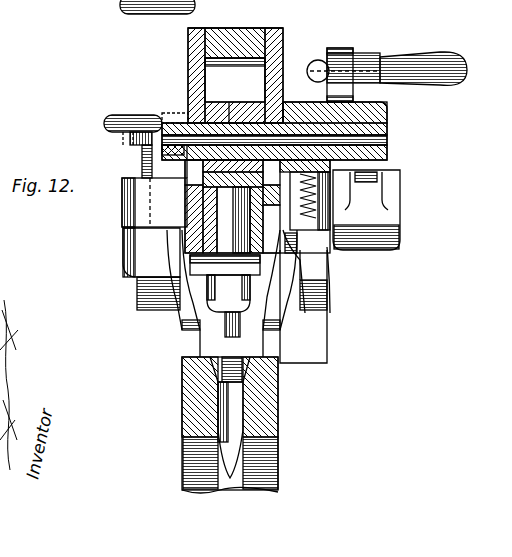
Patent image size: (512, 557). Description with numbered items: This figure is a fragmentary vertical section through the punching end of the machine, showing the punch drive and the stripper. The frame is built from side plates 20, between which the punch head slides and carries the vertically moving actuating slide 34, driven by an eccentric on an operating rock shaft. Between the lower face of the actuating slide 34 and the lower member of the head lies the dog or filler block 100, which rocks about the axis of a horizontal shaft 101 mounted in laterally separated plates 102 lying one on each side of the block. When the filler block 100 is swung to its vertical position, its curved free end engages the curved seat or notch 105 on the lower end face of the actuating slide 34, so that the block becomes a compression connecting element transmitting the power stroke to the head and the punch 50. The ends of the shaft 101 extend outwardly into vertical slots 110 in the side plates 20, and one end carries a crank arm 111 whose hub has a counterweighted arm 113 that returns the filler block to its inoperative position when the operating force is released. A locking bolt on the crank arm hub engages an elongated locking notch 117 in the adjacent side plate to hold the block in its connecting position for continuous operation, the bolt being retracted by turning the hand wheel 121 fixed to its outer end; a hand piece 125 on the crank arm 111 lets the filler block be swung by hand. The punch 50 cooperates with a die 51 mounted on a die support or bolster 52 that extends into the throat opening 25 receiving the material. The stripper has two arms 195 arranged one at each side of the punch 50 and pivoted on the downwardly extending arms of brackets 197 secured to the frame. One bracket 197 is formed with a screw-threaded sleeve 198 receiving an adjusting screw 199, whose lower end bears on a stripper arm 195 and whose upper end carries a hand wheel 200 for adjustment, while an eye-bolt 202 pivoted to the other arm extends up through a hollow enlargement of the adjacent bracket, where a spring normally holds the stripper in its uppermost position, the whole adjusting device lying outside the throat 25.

The side plates 20 is at (189, 50).
The actuating slide 34 is at (237, 27).
The dog or filler block 100 is at (240, 101).
The laterally separated plates 102 is at (207, 110).
The curved seat or notch 105 is at (207, 62).
The vertical slots 110 is at (287, 112).
The crank arm 111 is at (348, 90).
The counterweighted arm 113 is at (410, 202).
The elongated locking notch 117 is at (272, 240).
The hand wheel 121 is at (134, 12).
The hand piece 125 is at (443, 54).
The rock shaft 101 is at (388, 137).
The stripper arms 195 is at (187, 310).
The brackets 197 is at (142, 292).
The screw-threaded sleeve 198 is at (128, 207).
The adjusting screw 199 is at (145, 157).
The hand wheel 200 is at (128, 122).
The eye-bolt 202 is at (308, 232).
The throat opening 25 is at (253, 338).
The punch 50 is at (227, 331).
The die 51 is at (251, 367).
The die support or bolster 52 is at (274, 418).